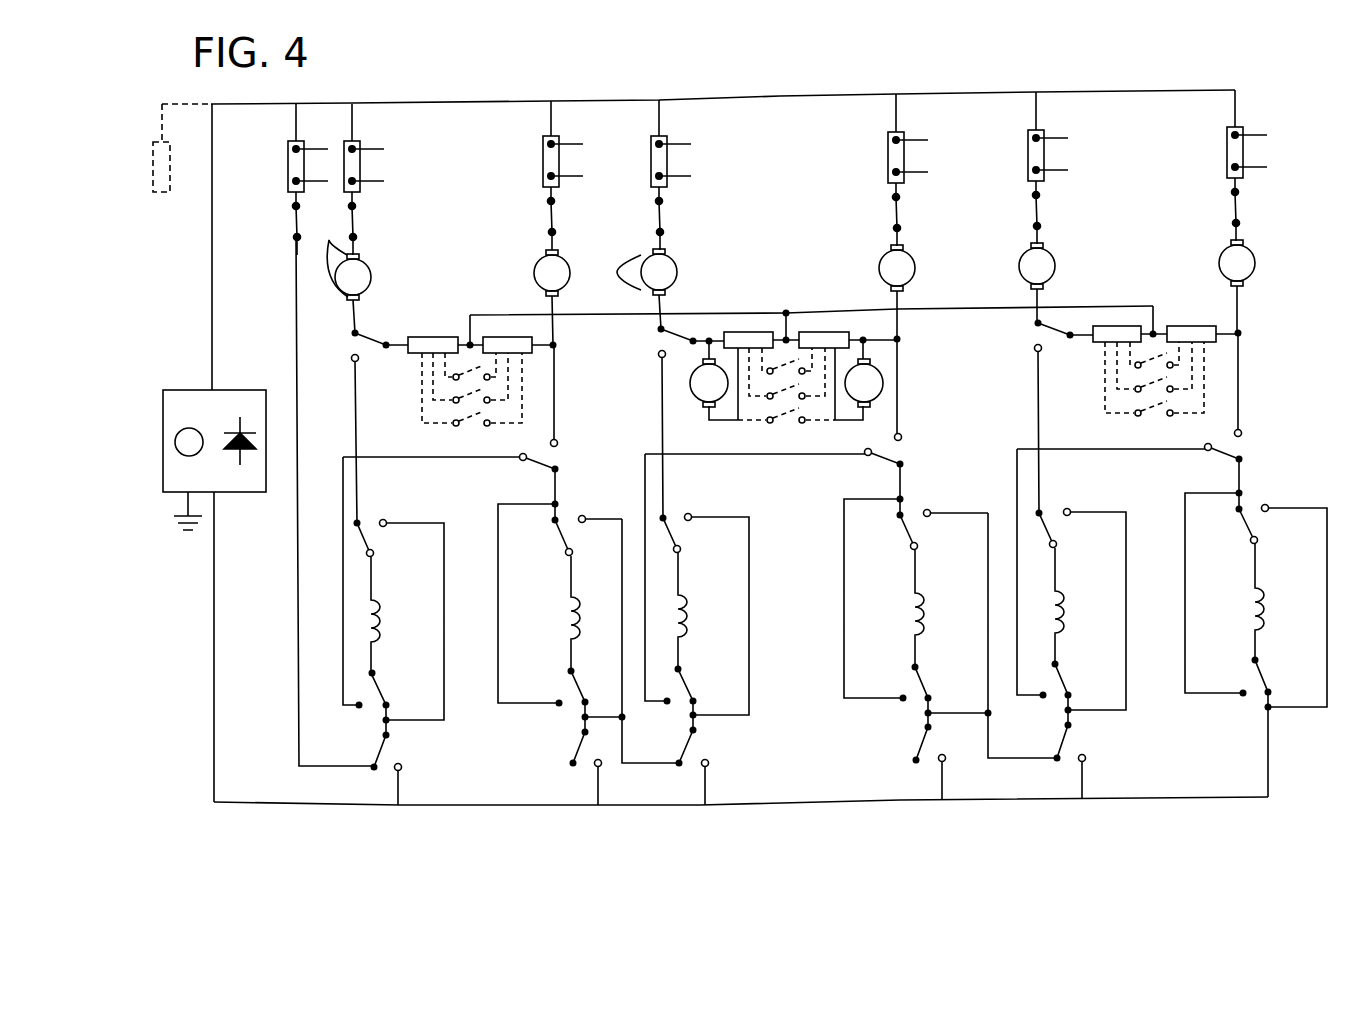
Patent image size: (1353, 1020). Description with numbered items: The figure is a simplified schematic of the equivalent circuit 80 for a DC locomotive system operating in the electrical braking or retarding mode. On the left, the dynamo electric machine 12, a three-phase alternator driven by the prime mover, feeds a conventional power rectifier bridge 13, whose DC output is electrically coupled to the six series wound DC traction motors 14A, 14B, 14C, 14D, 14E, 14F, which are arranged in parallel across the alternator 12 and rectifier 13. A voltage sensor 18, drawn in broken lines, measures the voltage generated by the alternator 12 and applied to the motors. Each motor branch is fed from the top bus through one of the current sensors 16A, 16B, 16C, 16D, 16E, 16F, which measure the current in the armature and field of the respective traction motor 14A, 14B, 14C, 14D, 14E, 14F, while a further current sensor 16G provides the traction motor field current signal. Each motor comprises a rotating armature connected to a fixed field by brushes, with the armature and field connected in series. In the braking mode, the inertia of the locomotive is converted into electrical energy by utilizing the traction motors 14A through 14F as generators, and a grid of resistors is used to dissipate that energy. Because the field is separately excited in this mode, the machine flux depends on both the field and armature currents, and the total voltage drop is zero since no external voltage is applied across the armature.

The dynamo electric machine 12 is at (163, 437).
The power rectifier bridge 13 is at (189, 447).
The DC traction motor 14A is at (383, 275).
The DC traction motor 14B is at (517, 286).
The DC traction motor 14C is at (669, 273).
The DC traction motor 14D is at (935, 276).
The DC traction motor 14E is at (1075, 266).
The DC traction motor 14F is at (1275, 270).
The current sensor 16A is at (360, 170).
The current sensor 16B is at (543, 165).
The current sensor 16C is at (651, 163).
The current sensor 16D is at (888, 160).
The current sensor 16E is at (1028, 158).
The current sensor 16F is at (1227, 155).
The current sensor 16G is at (288, 170).
The voltage sensor 18 is at (153, 172).
The equivalent circuit 80 is at (1100, 66).